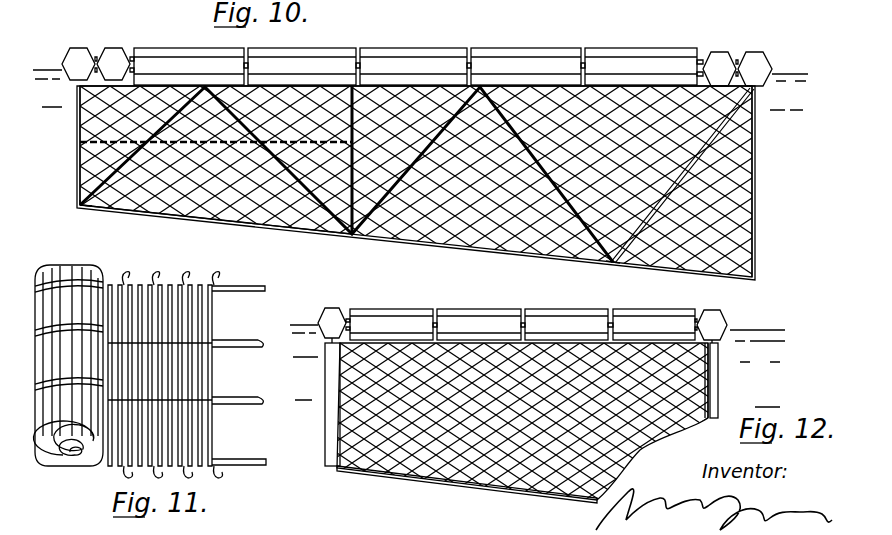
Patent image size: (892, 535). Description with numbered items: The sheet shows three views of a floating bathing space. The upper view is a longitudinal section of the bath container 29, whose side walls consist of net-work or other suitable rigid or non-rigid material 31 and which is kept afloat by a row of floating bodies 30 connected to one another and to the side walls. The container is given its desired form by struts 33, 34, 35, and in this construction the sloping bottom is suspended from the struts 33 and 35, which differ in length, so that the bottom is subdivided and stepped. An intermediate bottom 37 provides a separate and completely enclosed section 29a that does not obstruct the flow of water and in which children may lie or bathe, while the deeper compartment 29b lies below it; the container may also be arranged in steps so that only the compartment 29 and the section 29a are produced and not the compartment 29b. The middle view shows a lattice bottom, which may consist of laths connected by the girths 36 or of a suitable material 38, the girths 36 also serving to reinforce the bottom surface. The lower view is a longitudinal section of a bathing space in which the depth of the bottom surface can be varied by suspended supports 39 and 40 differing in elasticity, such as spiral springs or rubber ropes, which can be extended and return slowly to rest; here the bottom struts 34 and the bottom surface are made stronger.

In FIG. 10, the bath container 29 is at (740, 227).
In FIG. 12, the bath container 29 is at (634, 456).
In FIG. 10, the separate enclosed section 29a is at (88, 118).
In FIG. 10, the compartment 29b is at (172, 224).
In FIG. 10, the floating bodies 30 is at (402, 48).
In FIG. 12, the floating bodies 30 is at (486, 312).
In FIG. 10, the net-work or other suitable material 31 is at (90, 166).
In FIG. 12, the net-work or other suitable material 31 is at (712, 393).
In FIG. 10, the struts 33 is at (330, 231).
In FIG. 10, the bottom struts 34 is at (120, 208).
In FIG. 12, the bottom struts 34 is at (406, 478).
In FIG. 10, the struts 35 is at (602, 264).
In FIG. 11, the girths 36 is at (238, 342).
In FIG. 10, the intermediate bottom 37 is at (64, 142).
In FIG. 11, the suitable material 38 is at (214, 378).
In FIG. 12, the suspended support 39 is at (330, 430).
In FIG. 12, the suspended support 40 is at (714, 366).